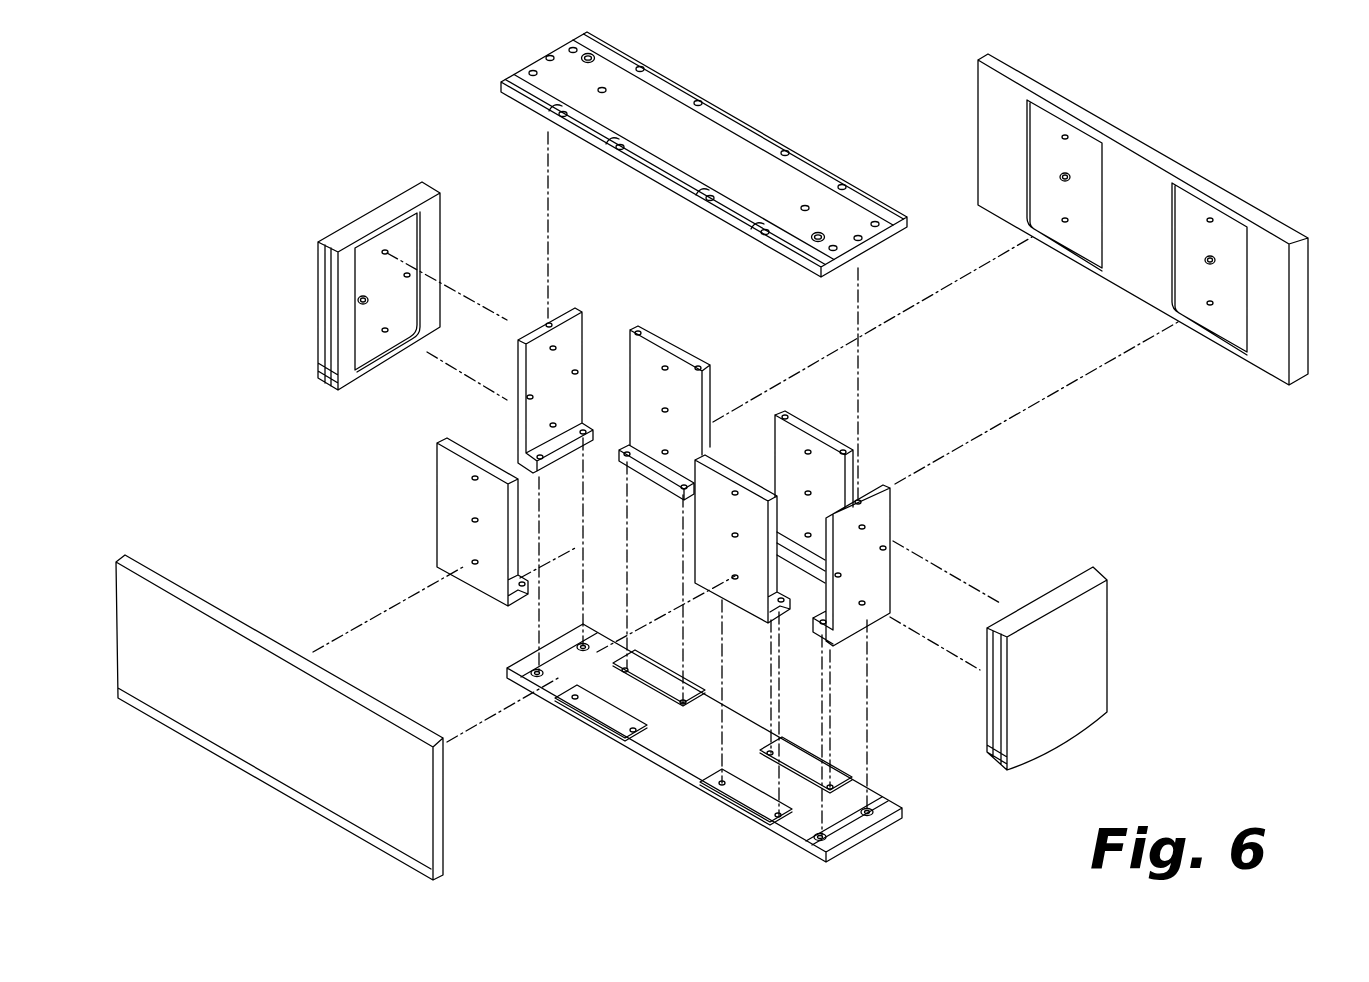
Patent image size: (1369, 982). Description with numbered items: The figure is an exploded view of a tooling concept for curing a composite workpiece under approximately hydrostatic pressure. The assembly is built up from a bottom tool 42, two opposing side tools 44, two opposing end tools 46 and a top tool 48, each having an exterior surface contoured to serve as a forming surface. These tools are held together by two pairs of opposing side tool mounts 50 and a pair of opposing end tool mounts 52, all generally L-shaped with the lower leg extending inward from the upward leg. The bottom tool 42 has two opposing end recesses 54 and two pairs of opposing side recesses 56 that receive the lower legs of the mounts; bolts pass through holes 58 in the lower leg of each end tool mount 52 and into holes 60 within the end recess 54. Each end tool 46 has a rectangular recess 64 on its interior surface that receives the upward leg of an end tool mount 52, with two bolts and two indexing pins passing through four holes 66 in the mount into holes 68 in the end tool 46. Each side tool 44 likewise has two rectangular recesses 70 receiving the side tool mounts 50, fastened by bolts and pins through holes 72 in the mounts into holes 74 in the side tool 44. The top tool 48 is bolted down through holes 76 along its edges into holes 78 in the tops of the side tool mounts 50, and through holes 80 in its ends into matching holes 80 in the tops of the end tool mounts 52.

The bottom tool 42 is at (900, 821).
The side tool 44 is at (1310, 341).
The end tool 46 is at (315, 309).
The top tool 48 is at (748, 112).
The side tool mount 50 is at (443, 492).
The end tool mount 52 is at (537, 328).
The end recess 54 is at (556, 651).
The side recess 56 is at (648, 676).
The hole in lower leg of end tool mount 58 is at (553, 458).
The hole in end recess 60 is at (584, 646).
The rectangular recess 64 is at (370, 255).
The hole in end tool mount 66 is at (555, 347).
The hole in end tool 68 is at (387, 252).
The rectangular recess 70 is at (1033, 157).
The hole in side tool mount 72 is at (806, 534).
The hole in side tool 74 is at (1066, 135).
The hole in top tool 76 is at (641, 67).
The hole in top of side tool mount 78 is at (639, 332).
The hole 80 is at (549, 56).